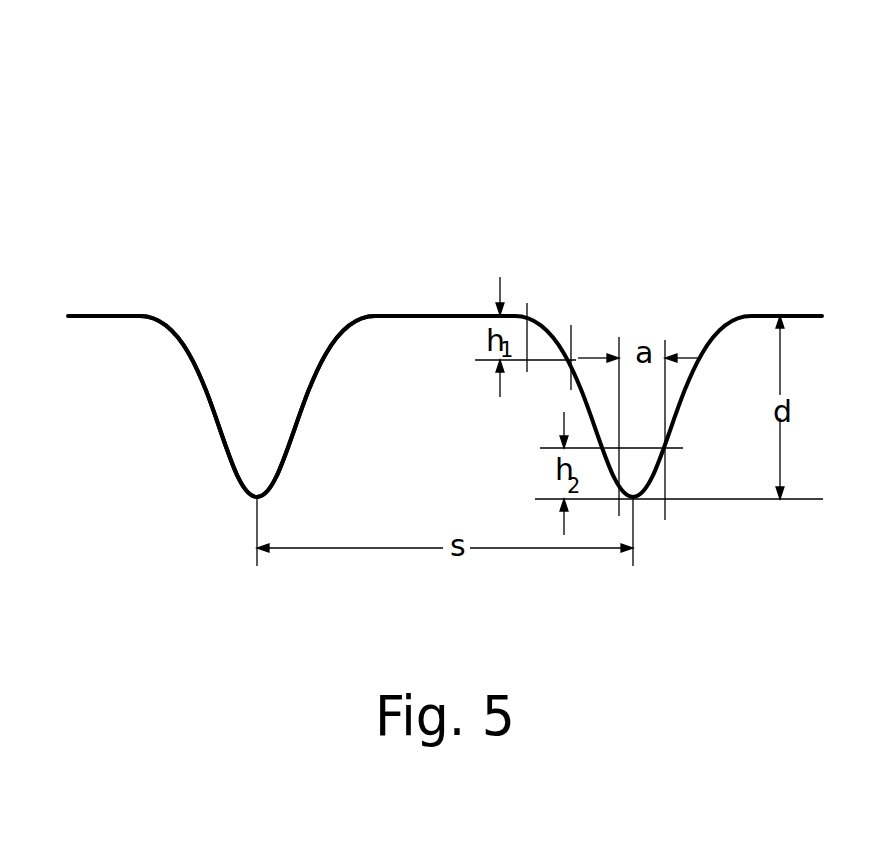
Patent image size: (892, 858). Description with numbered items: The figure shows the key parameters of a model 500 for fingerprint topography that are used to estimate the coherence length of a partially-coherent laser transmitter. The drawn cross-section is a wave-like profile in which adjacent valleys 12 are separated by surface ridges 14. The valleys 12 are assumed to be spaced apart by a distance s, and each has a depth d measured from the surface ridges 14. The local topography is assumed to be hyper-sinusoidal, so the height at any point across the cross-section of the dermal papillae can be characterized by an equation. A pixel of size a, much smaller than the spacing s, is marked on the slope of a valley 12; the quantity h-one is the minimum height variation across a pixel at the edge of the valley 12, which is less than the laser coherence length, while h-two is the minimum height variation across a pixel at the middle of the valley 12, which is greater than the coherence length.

The model for fingerprint topography 500 is at (139, 129).
The valleys 12 is at (320, 572).
The surface ridges 14 is at (547, 277).